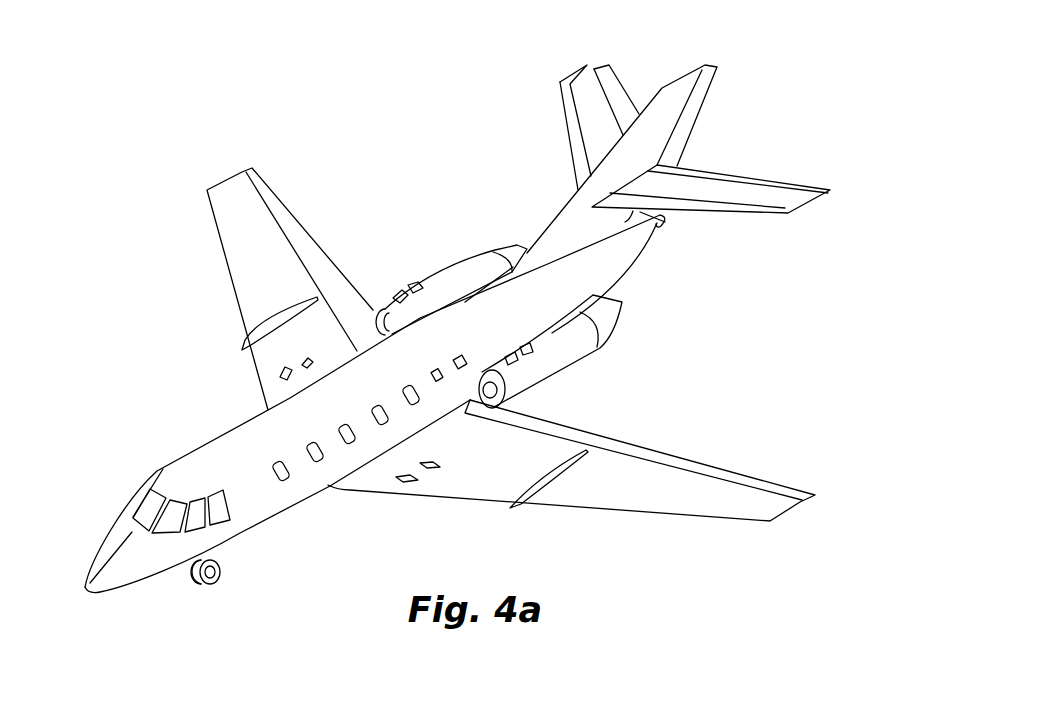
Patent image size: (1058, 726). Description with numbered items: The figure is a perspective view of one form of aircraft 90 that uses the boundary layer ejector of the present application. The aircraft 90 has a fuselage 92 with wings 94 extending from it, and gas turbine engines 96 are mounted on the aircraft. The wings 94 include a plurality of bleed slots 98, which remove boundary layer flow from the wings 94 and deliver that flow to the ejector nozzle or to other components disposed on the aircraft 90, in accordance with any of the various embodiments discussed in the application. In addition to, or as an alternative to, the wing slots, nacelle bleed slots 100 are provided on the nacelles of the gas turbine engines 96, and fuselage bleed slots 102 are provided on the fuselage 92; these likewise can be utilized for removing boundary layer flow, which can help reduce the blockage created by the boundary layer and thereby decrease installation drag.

The aircraft 90 is at (450, 158).
The fuselage 92 is at (186, 470).
The wings 94 is at (235, 218).
The gas turbine engines 96 is at (473, 270).
The bleed slots 98 is at (282, 370).
The nacelle bleed slots 100 is at (398, 288).
The fuselage bleed slots 102 is at (459, 357).